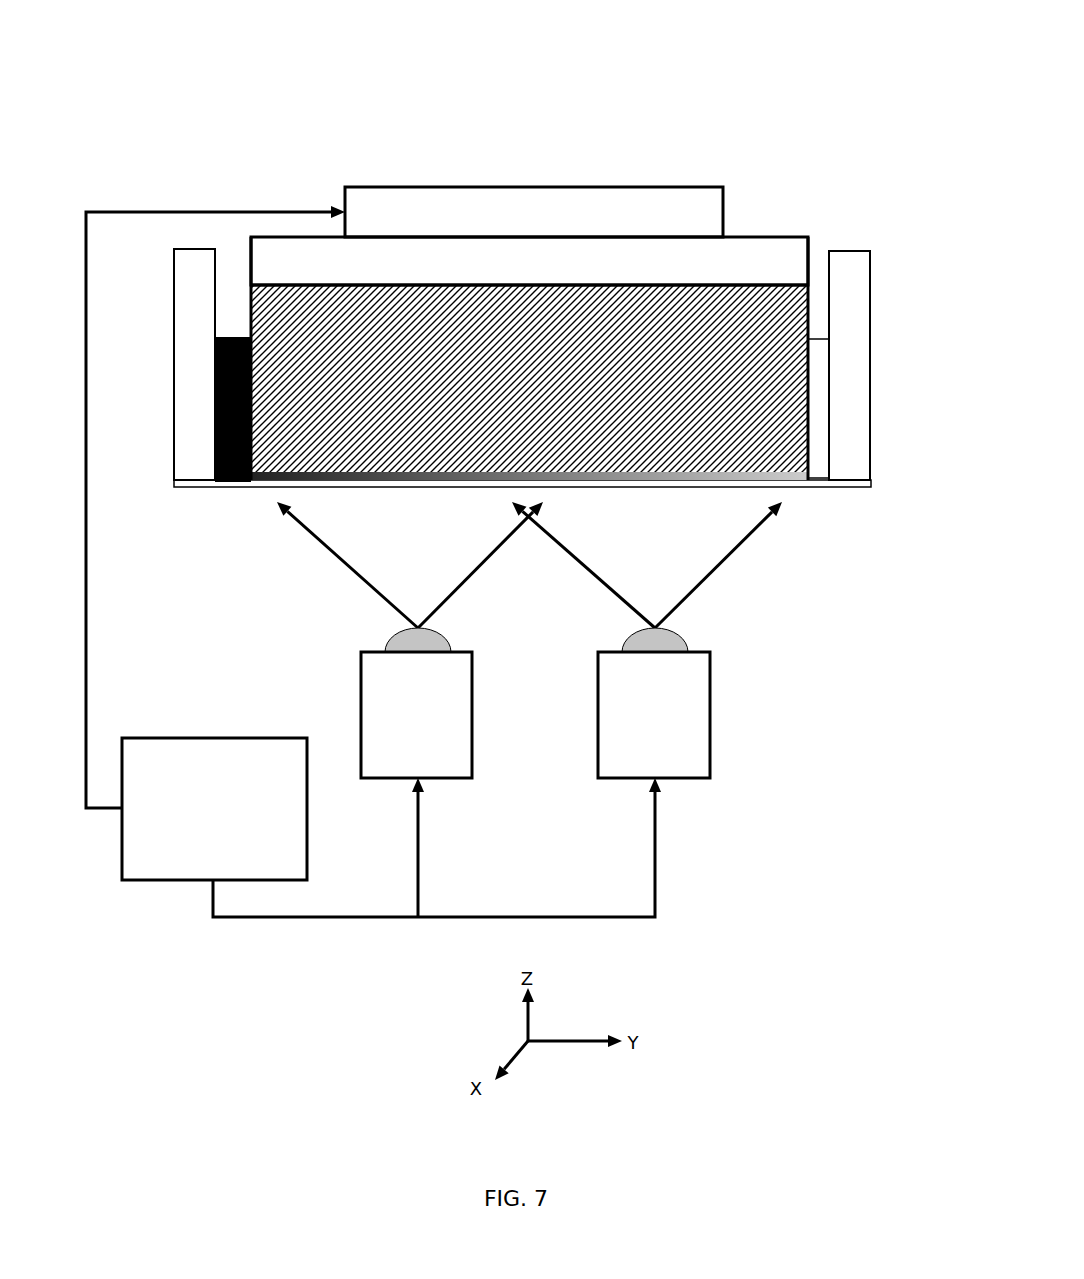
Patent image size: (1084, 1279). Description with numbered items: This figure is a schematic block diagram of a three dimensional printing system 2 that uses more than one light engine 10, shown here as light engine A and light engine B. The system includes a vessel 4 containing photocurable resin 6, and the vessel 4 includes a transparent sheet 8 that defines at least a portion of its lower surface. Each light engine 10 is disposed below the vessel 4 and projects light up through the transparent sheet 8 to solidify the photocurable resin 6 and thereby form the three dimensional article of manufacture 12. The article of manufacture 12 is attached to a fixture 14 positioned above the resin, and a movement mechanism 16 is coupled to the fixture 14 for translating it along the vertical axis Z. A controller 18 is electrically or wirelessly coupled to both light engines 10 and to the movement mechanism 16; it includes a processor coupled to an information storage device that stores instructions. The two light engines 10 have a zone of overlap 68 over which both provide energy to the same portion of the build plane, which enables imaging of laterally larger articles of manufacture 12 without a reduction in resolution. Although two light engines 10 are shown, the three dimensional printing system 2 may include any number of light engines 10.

The three dimensional printing system 2 is at (642, 72).
The vessel 4 is at (845, 257).
The photocurable resin 6 is at (820, 377).
The transparent sheet 8 is at (222, 486).
The light engine 10 is at (473, 710).
The three dimensional article of manufacture 12 is at (787, 433).
The fixture 14 is at (773, 235).
The movement mechanism 16 is at (627, 184).
The controller 18 is at (188, 737).
The zone of overlap 68 is at (530, 495).